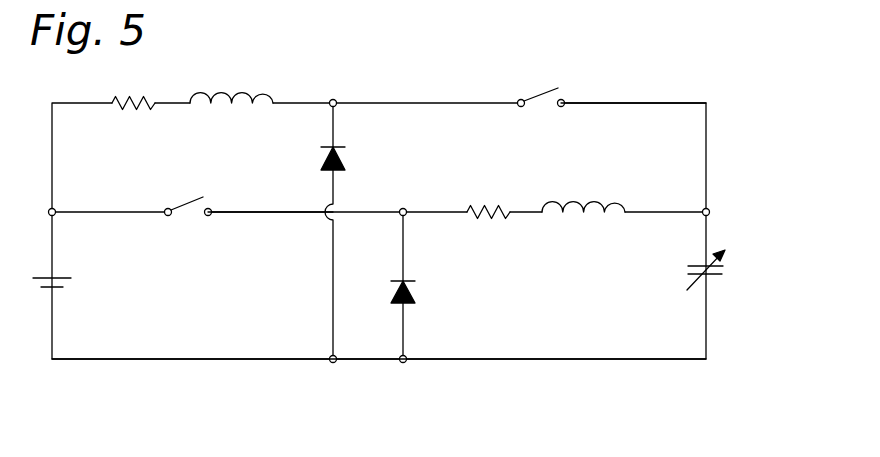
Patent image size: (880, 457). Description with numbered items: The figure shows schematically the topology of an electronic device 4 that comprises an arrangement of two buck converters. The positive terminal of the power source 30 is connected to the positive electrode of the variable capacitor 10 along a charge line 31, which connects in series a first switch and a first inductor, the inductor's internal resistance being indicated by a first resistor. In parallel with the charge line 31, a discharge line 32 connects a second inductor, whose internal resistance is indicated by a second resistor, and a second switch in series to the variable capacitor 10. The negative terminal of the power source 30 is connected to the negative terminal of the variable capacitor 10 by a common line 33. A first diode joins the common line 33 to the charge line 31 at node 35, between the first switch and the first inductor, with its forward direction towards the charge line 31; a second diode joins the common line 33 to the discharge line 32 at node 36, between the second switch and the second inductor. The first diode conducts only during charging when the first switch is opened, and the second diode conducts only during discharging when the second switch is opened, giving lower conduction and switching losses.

The electronic device 4 is at (447, 73).
The node 36 is at (337, 101).
The node 35 is at (406, 210).
The discharge line 32 is at (616, 102).
The charge line 31 is at (278, 214).
The common line 33 is at (518, 361).
The power source 30 is at (42, 285).
The variable capacitor 10 is at (714, 275).